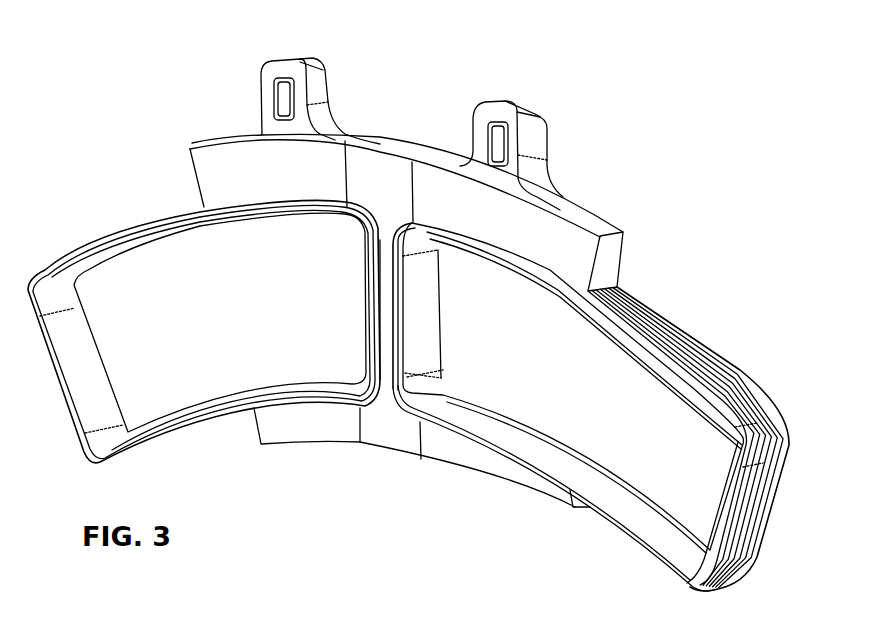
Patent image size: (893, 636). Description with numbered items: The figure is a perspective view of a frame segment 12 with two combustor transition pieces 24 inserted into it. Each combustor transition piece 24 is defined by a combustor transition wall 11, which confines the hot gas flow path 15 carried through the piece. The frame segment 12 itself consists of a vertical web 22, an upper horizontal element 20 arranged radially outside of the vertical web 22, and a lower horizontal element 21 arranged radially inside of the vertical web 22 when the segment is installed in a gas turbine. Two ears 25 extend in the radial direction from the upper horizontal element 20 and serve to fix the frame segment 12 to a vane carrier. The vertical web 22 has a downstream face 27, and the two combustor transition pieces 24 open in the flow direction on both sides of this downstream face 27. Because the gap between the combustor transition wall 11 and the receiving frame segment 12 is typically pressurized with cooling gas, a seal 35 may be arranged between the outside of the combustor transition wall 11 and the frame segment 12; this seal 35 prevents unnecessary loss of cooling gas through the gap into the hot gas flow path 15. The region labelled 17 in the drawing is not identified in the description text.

The combustor transition wall 11 is at (615, 318).
The frame segment 12 is at (423, 105).
The hot gas flow path 15 is at (283, 297).
The second friction pad segment 17 is at (600, 388).
The upper horizontal element 20 is at (580, 263).
The lower horizontal element 21 is at (494, 468).
The vertical web 22 is at (386, 332).
The combustor transition piece 24 is at (122, 210).
The ear 25 is at (260, 98).
The downstream face 27 is at (447, 315).
The seal 35 is at (748, 395).